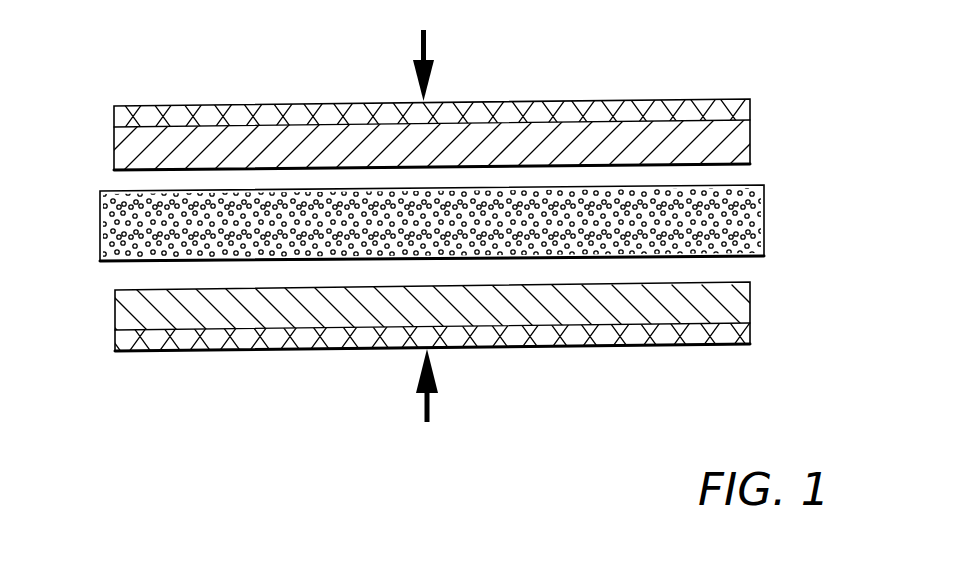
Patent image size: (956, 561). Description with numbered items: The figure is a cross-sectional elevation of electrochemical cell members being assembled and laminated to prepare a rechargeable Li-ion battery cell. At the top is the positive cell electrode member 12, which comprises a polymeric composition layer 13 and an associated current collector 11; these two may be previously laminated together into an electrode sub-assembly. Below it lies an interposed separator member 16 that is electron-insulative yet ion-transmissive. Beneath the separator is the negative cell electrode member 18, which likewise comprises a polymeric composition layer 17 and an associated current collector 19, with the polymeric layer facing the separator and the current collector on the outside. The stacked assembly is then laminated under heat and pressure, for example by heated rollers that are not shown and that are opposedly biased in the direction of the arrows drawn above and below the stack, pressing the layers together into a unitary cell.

The current collector 11 is at (752, 115).
The positive cell electrode member 12 is at (440, 132).
The polymeric composition layer 13 is at (748, 153).
The separator member 16 is at (100, 226).
The polymeric composition layer 17 is at (744, 293).
The negative cell electrode member 18 is at (430, 319).
The current collector 19 is at (750, 338).